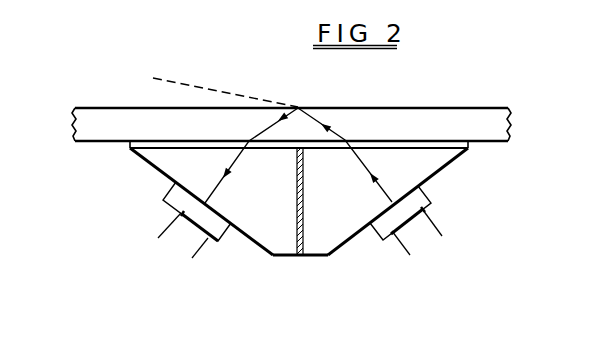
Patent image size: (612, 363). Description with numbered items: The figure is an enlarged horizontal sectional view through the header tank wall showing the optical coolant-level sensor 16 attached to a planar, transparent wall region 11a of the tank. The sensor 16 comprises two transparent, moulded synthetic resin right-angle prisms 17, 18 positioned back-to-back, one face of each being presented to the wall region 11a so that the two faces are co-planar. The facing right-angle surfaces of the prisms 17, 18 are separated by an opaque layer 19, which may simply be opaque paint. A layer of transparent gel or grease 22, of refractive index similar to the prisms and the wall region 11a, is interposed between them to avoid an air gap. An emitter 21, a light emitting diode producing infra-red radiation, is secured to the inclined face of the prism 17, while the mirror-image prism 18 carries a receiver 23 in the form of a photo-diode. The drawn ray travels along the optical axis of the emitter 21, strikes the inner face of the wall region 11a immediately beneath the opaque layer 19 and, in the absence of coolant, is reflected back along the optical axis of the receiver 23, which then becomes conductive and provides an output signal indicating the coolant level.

The wall region 11a is at (95, 121).
The layer of transparent gel or grease 22 is at (440, 143).
The sensor 16 is at (257, 263).
The prism 17 is at (332, 224).
The prism 18 is at (284, 243).
The opaque layer 19 is at (312, 255).
The emitter 21 is at (407, 212).
The receiver 23 is at (182, 220).